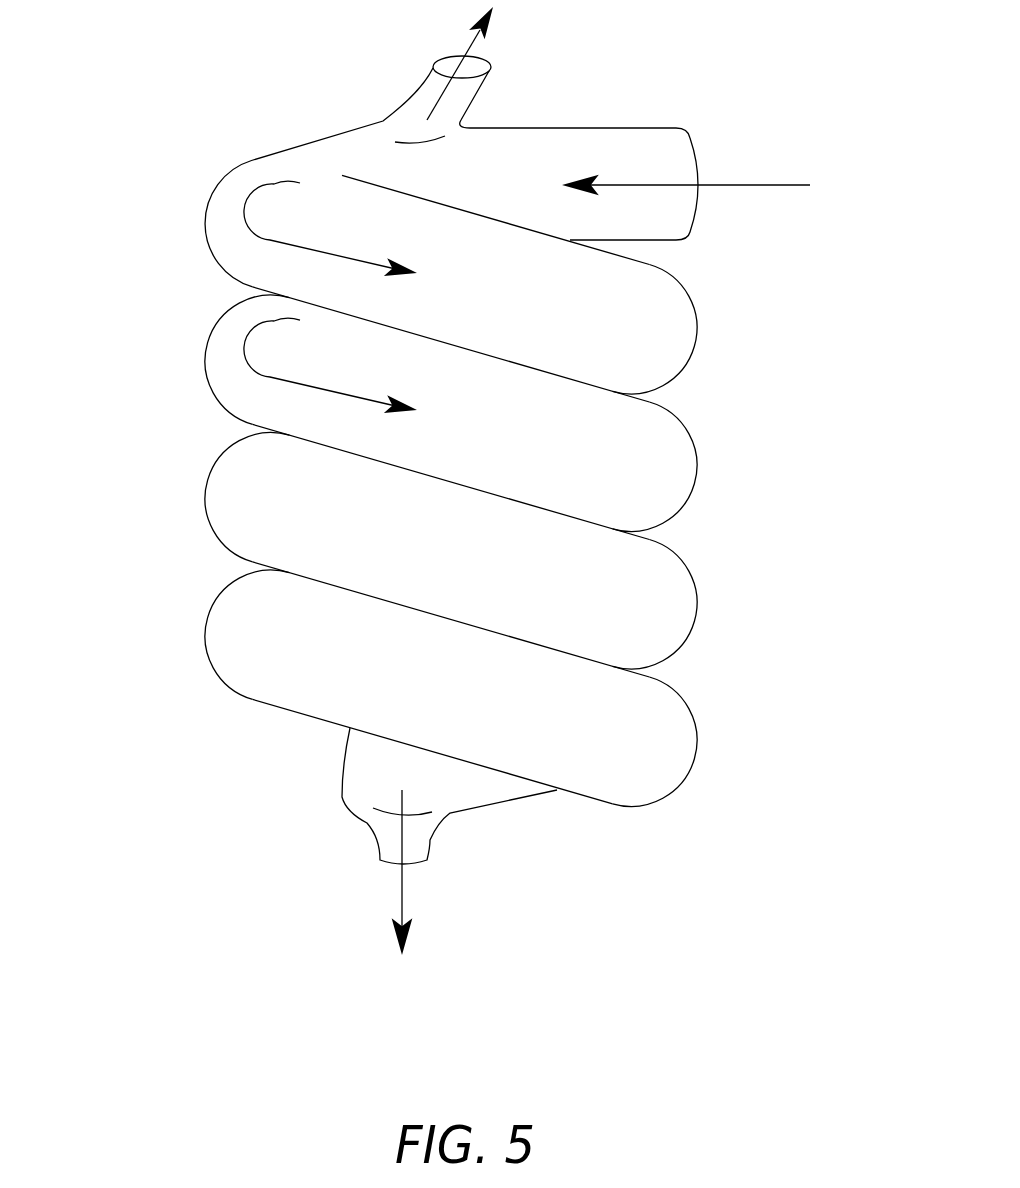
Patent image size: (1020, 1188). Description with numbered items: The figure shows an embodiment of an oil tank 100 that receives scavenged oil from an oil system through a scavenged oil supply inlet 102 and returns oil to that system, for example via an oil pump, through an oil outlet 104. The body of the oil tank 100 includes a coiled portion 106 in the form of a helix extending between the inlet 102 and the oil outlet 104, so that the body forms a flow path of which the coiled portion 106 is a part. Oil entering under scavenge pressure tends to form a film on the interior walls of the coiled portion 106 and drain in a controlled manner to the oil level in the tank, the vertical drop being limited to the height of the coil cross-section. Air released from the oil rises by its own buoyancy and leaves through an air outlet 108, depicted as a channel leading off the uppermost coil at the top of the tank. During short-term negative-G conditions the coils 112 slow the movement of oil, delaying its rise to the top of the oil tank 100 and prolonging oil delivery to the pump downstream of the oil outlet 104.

The oil tank 100 is at (126, 99).
The scavenged oil supply inlet 102 is at (690, 133).
The oil outlet 104 is at (417, 865).
The coiled portion 106 is at (735, 443).
The air outlet 108 is at (485, 84).
The coils 112 is at (205, 215).